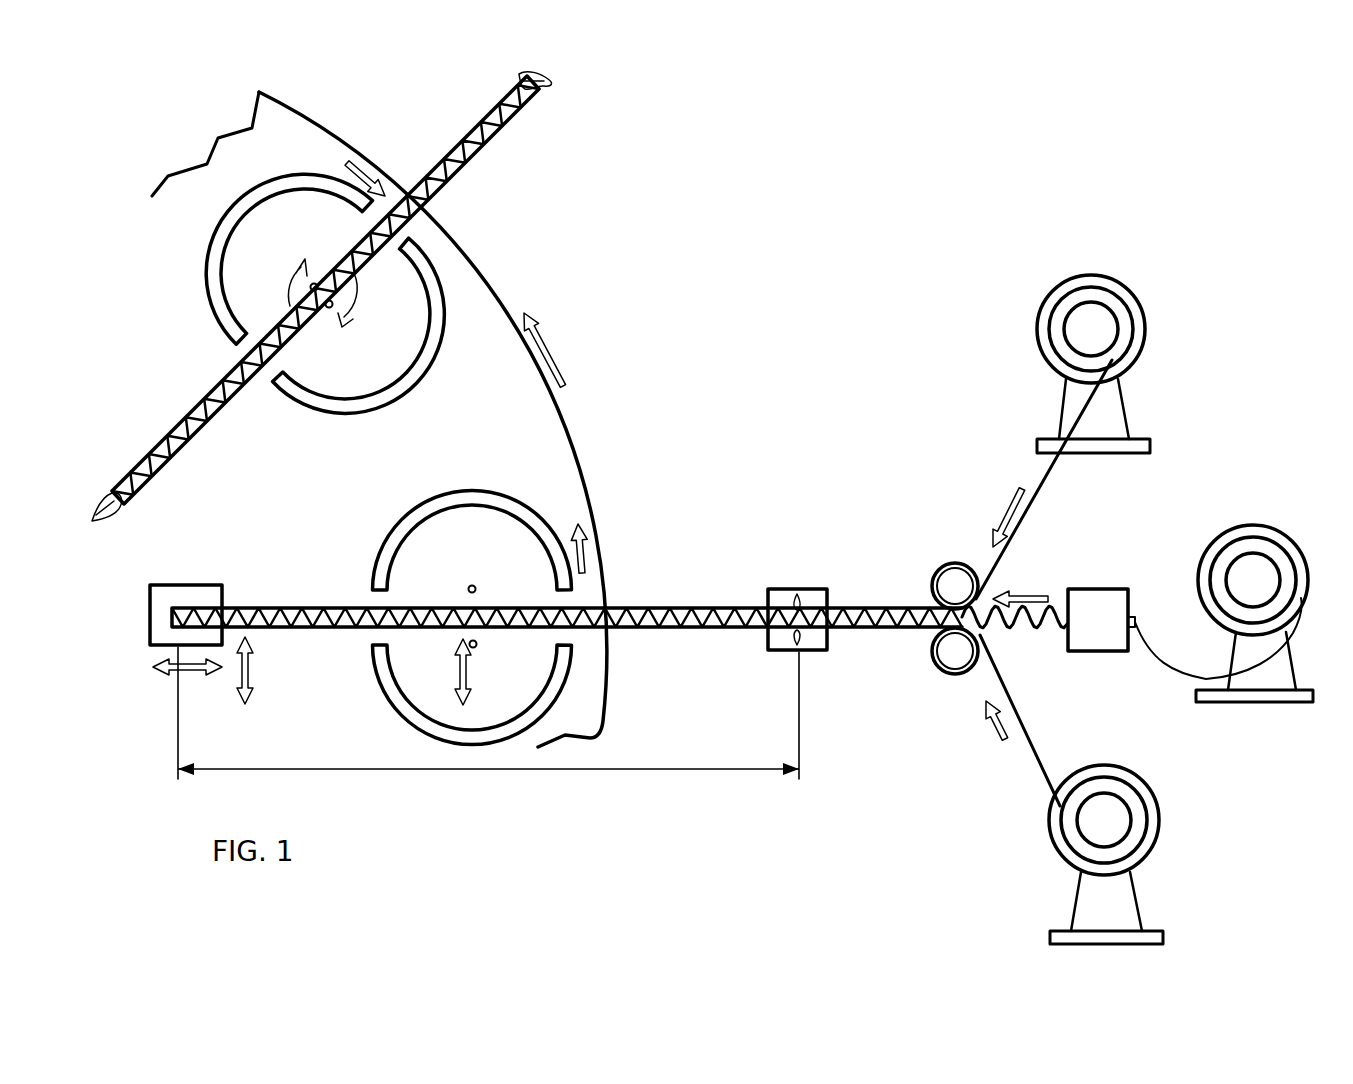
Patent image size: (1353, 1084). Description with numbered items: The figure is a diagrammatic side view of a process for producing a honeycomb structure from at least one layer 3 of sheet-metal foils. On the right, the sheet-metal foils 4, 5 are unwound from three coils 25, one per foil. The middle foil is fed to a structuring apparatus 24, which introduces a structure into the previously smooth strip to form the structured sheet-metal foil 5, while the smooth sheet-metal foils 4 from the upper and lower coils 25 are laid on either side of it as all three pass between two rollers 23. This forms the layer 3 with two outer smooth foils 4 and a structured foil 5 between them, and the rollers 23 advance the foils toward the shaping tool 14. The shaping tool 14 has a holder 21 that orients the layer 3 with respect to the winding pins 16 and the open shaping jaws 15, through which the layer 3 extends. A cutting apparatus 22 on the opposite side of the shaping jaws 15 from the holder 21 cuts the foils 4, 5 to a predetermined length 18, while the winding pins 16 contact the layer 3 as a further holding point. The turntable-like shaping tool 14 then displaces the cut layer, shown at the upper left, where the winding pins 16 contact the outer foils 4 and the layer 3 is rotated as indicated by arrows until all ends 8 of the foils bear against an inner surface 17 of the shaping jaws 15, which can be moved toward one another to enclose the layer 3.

The layer 3 is at (165, 433).
The smooth sheet-metal foil 4 is at (471, 126).
The structured sheet-metal foil 5 is at (454, 166).
The ends 8 is at (550, 82).
The shaping tool 14 is at (591, 464).
The shaping jaws 15 is at (208, 272).
The winding pins 16 is at (315, 283).
The inner surface 17 is at (408, 537).
The predetermined length 18 is at (467, 768).
The holder 21 is at (186, 584).
The cutting apparatus 22 is at (797, 588).
The rollers 23 is at (937, 570).
The structuring apparatus 24 is at (1098, 588).
The coils 25 is at (1120, 282).